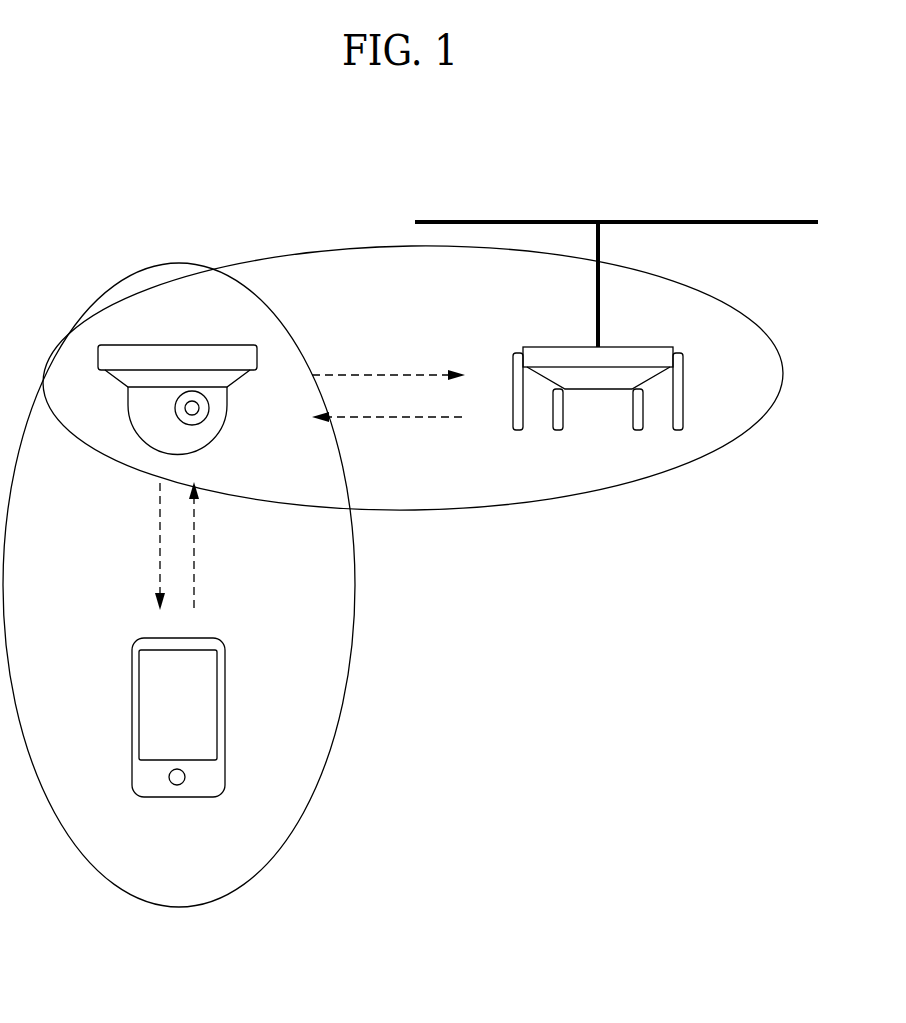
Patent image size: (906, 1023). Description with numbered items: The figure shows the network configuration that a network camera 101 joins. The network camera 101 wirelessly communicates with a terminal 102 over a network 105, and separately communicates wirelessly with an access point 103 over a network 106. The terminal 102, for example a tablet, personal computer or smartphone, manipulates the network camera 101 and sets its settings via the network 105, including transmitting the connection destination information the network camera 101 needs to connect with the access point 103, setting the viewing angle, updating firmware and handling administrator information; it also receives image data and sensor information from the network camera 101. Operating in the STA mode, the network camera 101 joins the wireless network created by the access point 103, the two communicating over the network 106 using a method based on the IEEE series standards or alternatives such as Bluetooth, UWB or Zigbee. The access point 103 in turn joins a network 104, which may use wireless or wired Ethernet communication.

The network camera 101 is at (195, 343).
The terminal 102 is at (228, 698).
The access point 103 is at (685, 393).
The network 104 is at (697, 220).
The network 105 is at (320, 768).
The network 106 is at (543, 503).